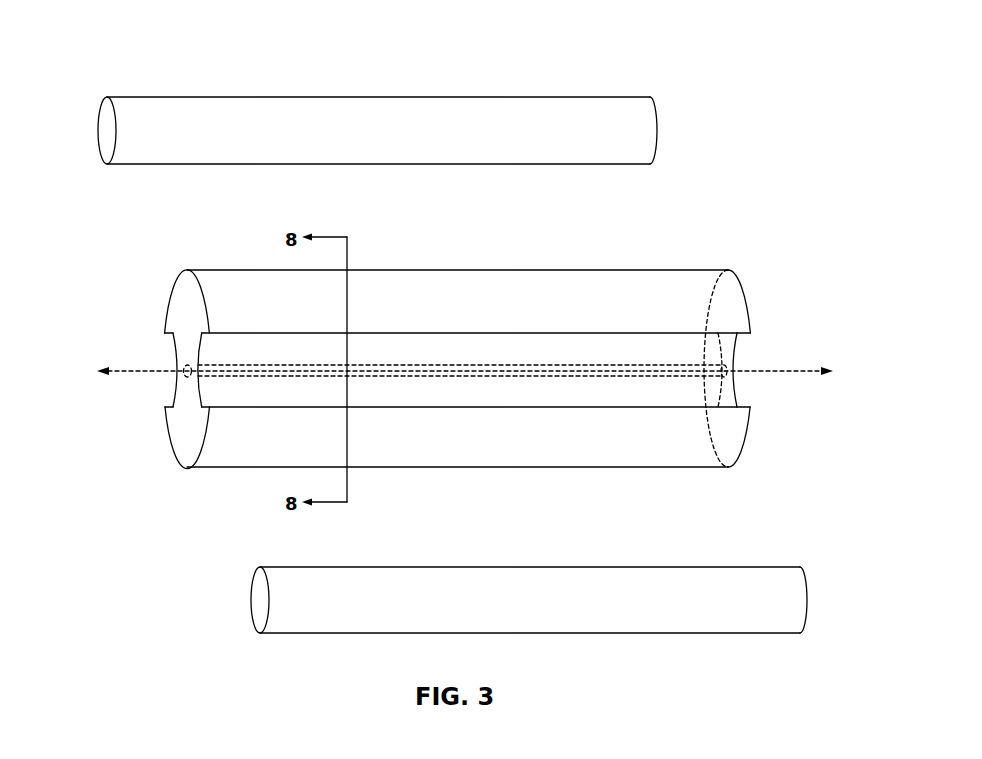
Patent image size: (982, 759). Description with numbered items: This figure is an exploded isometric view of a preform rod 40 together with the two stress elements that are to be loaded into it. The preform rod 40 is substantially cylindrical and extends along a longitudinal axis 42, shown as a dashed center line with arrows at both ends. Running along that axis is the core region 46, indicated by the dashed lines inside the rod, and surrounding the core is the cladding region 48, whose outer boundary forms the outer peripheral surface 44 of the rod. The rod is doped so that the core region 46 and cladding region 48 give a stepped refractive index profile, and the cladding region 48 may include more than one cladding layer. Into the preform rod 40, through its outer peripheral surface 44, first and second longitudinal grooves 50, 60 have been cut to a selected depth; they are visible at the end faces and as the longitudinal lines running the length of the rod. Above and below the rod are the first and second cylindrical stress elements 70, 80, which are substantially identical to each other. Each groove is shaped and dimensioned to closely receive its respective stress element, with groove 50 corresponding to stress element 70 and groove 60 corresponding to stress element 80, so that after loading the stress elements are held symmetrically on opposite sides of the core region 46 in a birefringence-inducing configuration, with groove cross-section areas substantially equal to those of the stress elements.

The preform rod 40 is at (758, 238).
The longitudinal axis 42 is at (806, 368).
The outer peripheral surface 44 is at (450, 258).
The core region 46 is at (517, 365).
The cladding region 48 is at (648, 298).
The first longitudinal groove 50 is at (176, 356).
The second longitudinal groove 60 is at (282, 333).
The first stress element 70 is at (630, 76).
The second stress element 80 is at (776, 542).